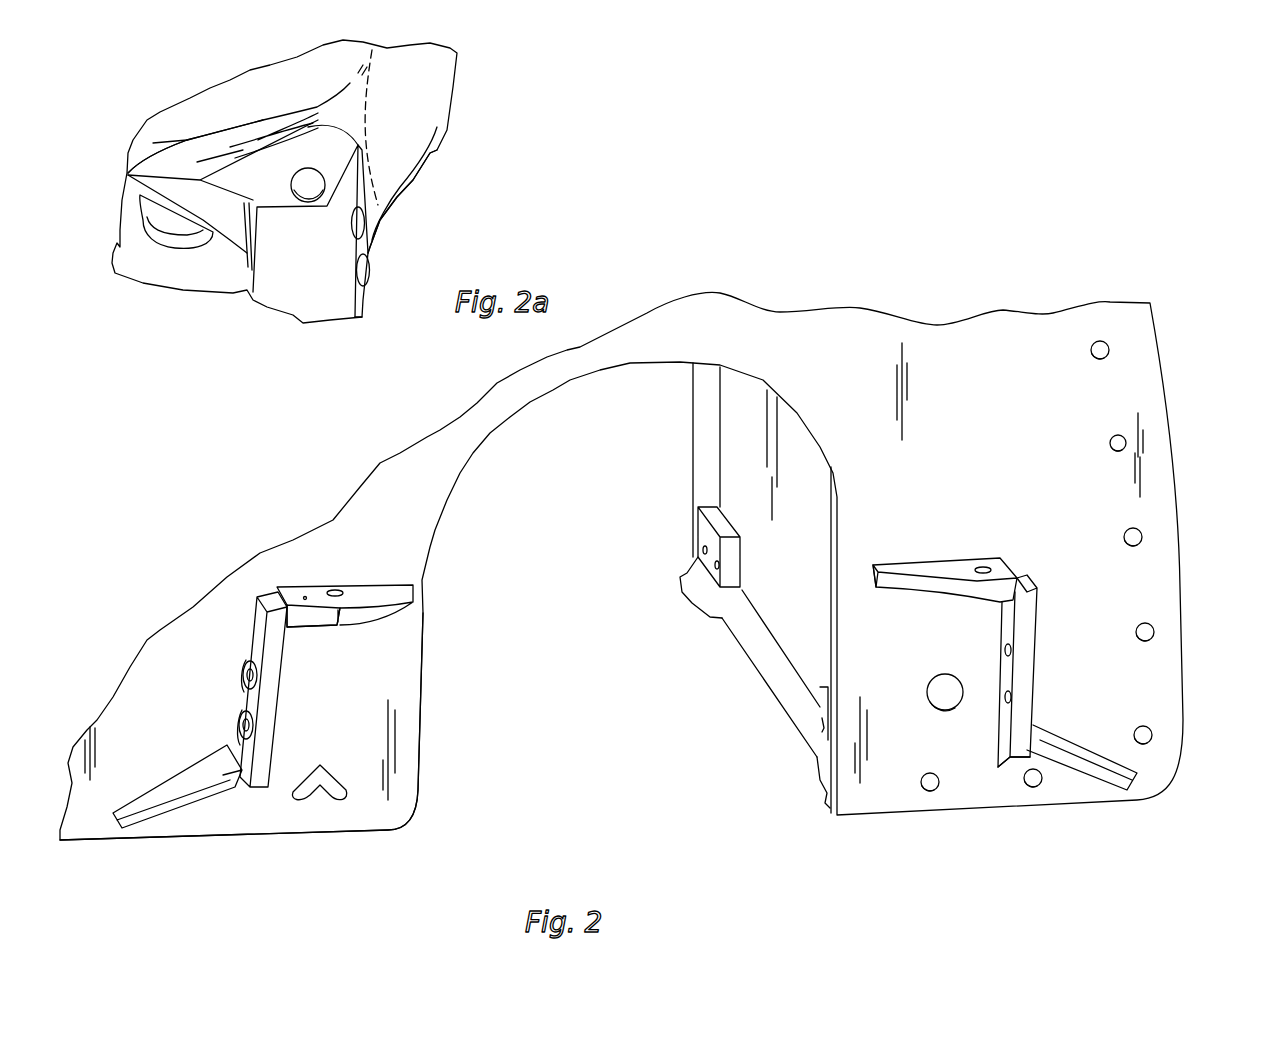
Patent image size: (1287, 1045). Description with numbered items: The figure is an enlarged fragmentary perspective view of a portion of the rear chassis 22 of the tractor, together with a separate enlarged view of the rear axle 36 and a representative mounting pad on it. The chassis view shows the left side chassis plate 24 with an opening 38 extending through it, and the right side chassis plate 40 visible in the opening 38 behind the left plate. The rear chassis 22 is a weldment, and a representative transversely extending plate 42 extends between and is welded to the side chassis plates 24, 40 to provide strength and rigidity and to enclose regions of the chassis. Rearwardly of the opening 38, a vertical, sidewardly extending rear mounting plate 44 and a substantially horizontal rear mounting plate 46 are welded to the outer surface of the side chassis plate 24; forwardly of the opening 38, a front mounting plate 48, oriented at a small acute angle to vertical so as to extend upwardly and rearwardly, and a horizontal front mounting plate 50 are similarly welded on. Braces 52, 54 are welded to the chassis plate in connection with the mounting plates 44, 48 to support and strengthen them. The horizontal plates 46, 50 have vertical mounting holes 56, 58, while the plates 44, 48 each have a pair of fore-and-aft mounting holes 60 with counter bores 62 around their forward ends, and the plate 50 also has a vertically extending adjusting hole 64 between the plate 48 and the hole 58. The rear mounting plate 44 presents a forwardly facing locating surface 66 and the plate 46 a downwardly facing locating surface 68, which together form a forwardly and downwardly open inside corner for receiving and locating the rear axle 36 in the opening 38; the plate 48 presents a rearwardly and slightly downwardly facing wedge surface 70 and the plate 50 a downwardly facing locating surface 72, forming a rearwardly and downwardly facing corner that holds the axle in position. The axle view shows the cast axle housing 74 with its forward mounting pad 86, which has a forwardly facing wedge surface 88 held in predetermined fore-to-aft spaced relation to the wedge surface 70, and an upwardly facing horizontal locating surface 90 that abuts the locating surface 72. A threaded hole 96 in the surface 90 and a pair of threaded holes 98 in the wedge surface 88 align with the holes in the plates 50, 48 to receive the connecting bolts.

In FIG. 2, the rear chassis 22 is at (1180, 753).
In FIG. 2, the left side chassis plate 24 is at (1180, 587).
In FIG. 2A, the rear axle 36 is at (458, 70).
In FIG. 2, the opening 38 is at (528, 788).
In FIG. 2, the right side chassis plate 40 is at (690, 432).
In FIG. 2, the transversely extending plate 42 is at (797, 618).
In FIG. 2, the rear mounting plate 44 is at (1033, 678).
In FIG. 2, the horizontal rear mounting plate 46 is at (1010, 563).
In FIG. 2, the front mounting plate 48 is at (247, 793).
In FIG. 2, the horizontal front mounting plate 50 is at (390, 612).
In FIG. 2, the brace 52 is at (1082, 768).
In FIG. 2, the brace 54 is at (183, 800).
In FIG. 2, the mounting hole 56 is at (983, 567).
In FIG. 2, the mounting hole 58 is at (337, 592).
In FIG. 2, the mounting holes 60 is at (1005, 697).
In FIG. 2, the counter bores 62 is at (240, 743).
In FIG. 2, the adjusting hole 64 is at (303, 597).
In FIG. 2, the locating surface 66 is at (1002, 745).
In FIG. 2, the locating surface 68 is at (927, 590).
In FIG. 2, the wedge surface 70 is at (270, 778).
In FIG. 2, the locating surface 72 is at (352, 620).
In FIG. 2A, the axle housing 74 is at (430, 150).
In FIG. 2A, the forward mounting pad 86 is at (307, 322).
In FIG. 2A, the wedge surface 88 is at (367, 302).
In FIG. 2A, the locating surface 90 is at (263, 175).
In FIG. 2A, the threaded hole 96 is at (308, 175).
In FIG. 2A, the threaded holes 98 is at (363, 268).